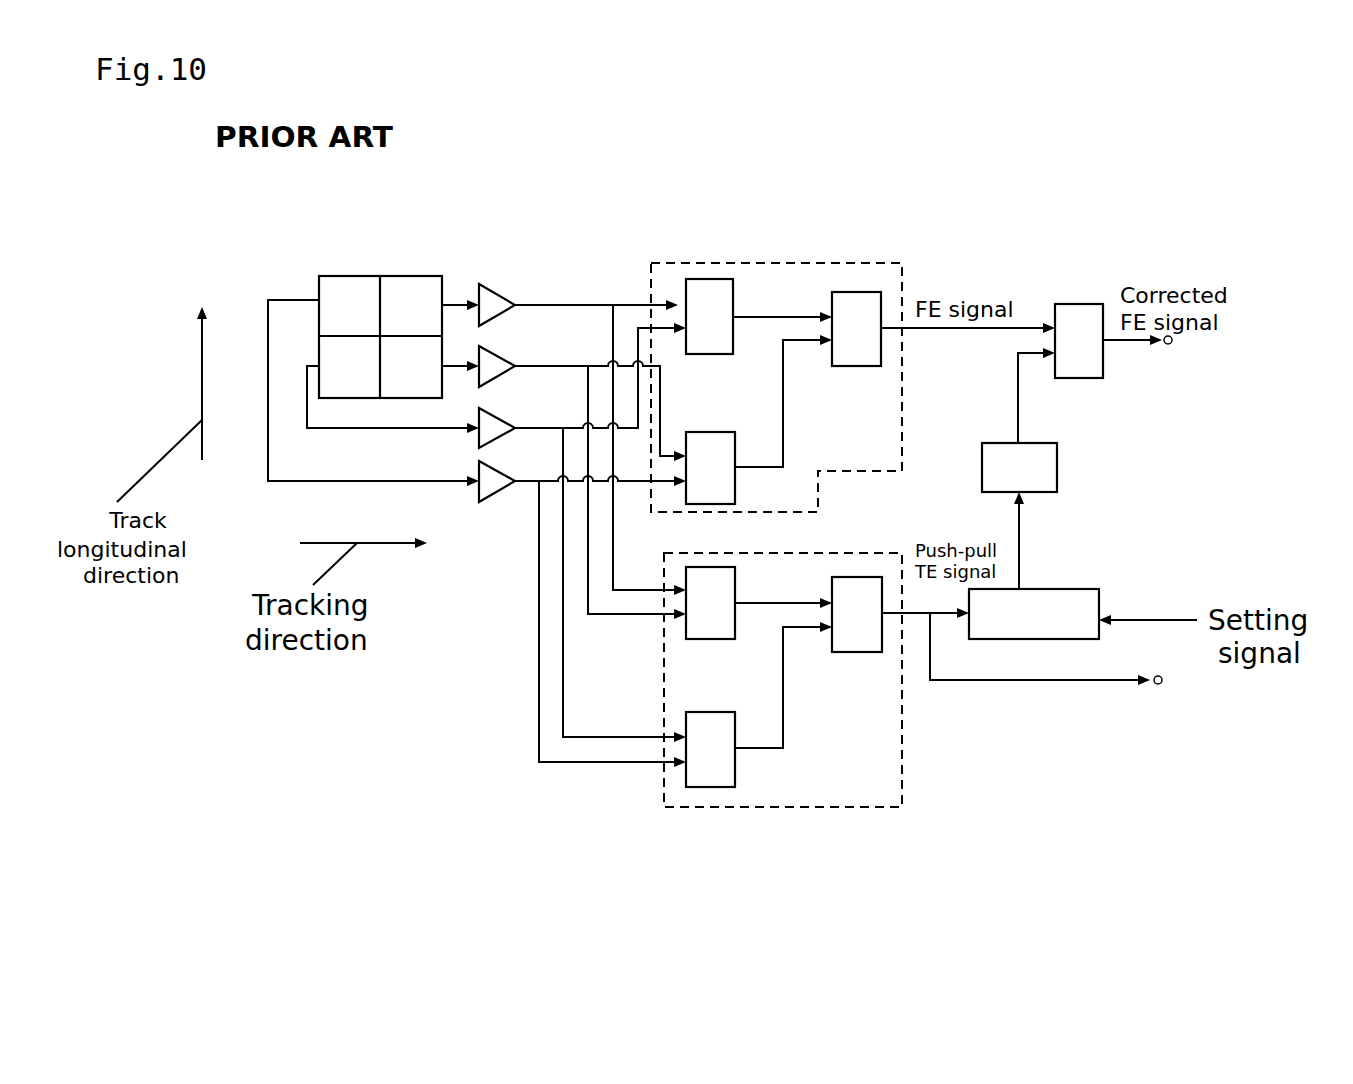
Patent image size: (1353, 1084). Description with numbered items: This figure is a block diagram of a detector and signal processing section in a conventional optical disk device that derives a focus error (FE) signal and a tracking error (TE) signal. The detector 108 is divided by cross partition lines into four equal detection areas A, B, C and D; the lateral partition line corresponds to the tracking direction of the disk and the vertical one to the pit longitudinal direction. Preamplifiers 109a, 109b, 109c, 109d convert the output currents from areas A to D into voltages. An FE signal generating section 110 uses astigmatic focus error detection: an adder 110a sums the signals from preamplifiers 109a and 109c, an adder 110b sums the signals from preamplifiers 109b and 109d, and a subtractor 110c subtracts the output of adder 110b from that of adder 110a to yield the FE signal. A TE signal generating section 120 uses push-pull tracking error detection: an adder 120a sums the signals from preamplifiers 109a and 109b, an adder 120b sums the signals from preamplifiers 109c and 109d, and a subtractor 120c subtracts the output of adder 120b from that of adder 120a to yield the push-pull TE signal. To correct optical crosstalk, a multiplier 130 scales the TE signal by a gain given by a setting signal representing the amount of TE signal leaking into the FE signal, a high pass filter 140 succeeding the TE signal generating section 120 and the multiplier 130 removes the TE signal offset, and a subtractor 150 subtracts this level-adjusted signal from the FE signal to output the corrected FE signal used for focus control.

The detector 108 is at (398, 277).
The preamplifier 109a is at (497, 290).
The preamplifier 109b is at (497, 365).
The preamplifier 109c is at (477, 435).
The preamplifier 109d is at (485, 500).
The FE signal generating section 110 is at (805, 262).
The adder 110a is at (693, 276).
The adder 110b is at (695, 432).
The subtractor 110c is at (860, 290).
The TE signal generating section 120 is at (885, 807).
The adder 120a is at (720, 640).
The adder 120b is at (693, 793).
The subtractor 120c is at (873, 652).
The multiplier 130 is at (1069, 580).
The high pass filter 140 is at (1058, 480).
The subtractor 150 is at (1072, 303).